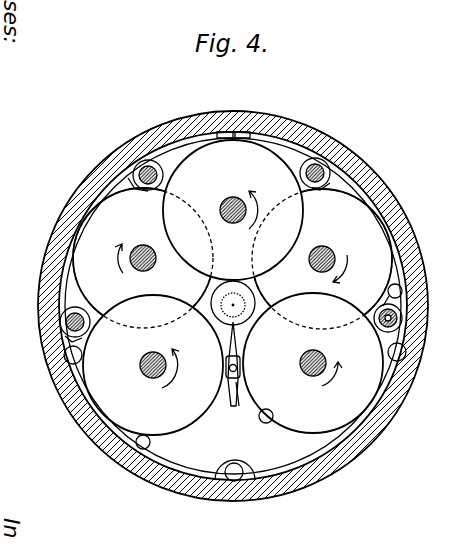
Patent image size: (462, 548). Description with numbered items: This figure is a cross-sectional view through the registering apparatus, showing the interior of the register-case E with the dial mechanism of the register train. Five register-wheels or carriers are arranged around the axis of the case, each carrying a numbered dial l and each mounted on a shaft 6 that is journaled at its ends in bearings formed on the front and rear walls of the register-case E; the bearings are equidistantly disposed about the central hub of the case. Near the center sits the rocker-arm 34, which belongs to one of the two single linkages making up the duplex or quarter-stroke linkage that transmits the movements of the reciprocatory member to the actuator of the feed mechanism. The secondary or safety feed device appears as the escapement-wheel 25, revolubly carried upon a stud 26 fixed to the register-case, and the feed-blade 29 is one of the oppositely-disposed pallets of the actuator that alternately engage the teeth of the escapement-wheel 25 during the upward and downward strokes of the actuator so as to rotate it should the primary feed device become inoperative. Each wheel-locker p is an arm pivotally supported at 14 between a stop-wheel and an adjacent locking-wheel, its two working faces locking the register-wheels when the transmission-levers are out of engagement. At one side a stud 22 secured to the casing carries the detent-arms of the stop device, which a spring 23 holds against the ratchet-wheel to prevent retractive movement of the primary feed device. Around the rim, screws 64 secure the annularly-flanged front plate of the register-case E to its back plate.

The register-case E is at (233, 306).
The dial l is at (272, 150).
The shaft 6 is at (233, 197).
The rocker-arm 34 is at (233, 303).
The stud 26 is at (232, 372).
The escapement-wheel 25 is at (236, 384).
The feed-blade 29 is at (266, 423).
The screw 64 is at (64, 356).
The pivot 14 is at (155, 167).
The wheel-locker p is at (138, 166).
The stud 22 is at (398, 318).
The spring 23 is at (402, 296).